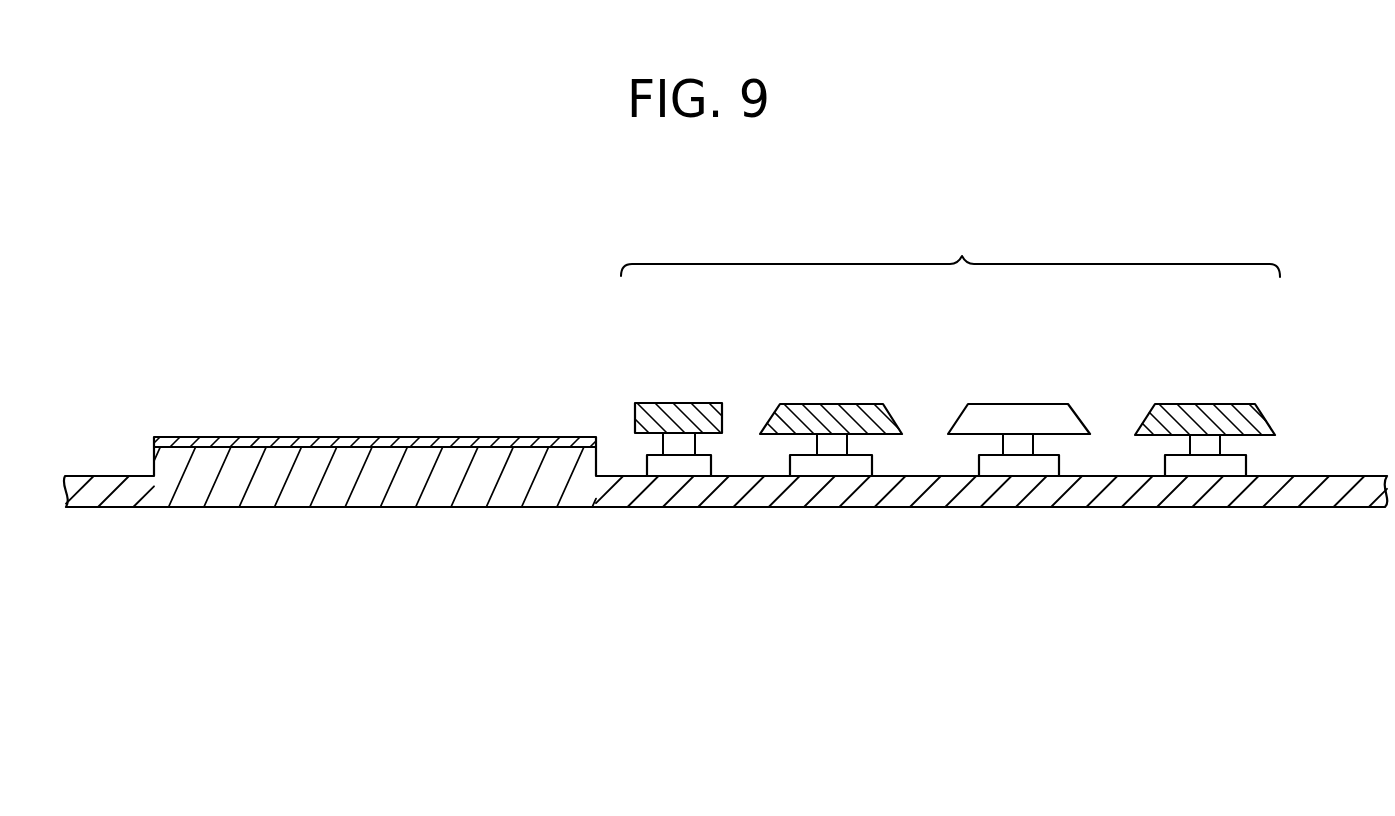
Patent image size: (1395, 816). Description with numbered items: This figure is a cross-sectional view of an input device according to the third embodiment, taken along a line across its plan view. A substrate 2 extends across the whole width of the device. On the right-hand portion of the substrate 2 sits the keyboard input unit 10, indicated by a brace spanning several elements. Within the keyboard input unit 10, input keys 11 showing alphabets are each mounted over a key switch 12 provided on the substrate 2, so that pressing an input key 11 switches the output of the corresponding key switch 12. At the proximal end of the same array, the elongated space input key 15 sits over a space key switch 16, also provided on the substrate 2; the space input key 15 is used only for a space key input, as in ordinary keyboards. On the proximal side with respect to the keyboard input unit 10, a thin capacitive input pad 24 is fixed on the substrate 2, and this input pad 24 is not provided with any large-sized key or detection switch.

The substrate 2 is at (1332, 487).
The keyboard input unit 10 is at (950, 247).
The input keys 11 is at (852, 413).
The key switches 12 is at (822, 467).
The space input key 15 is at (690, 403).
The space key switch 16 is at (672, 467).
The capacitive input pad 24 is at (352, 438).